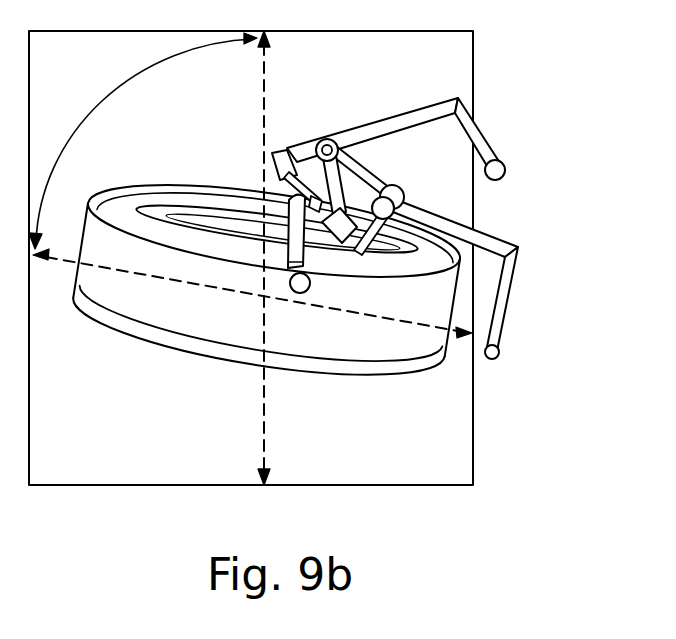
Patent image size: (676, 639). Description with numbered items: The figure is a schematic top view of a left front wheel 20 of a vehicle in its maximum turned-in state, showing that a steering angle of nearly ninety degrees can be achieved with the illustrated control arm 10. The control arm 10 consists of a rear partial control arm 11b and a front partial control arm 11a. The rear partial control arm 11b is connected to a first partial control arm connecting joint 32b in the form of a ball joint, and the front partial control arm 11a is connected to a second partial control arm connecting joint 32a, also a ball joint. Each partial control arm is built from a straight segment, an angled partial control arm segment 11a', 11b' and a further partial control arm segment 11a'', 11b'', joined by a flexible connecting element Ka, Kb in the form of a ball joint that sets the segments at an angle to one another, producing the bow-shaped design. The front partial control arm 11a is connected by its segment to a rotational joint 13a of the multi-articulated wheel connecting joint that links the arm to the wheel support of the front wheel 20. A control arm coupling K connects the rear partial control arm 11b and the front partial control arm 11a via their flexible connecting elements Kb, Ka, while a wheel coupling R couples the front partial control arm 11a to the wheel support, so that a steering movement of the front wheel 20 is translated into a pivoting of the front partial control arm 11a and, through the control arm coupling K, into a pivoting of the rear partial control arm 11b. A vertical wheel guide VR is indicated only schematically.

The control arm 10 is at (275, 126).
The wheel coupling R is at (273, 154).
The flexible connecting element Ka is at (322, 143).
The front partial control arm segment 11a'' is at (381, 135).
The control arm coupling K is at (451, 275).
The front partial control arm 11a is at (456, 112).
The angled partial control arm segment 11a' is at (540, 132).
The second partial control arm connecting joint 32a is at (504, 164).
The flexible connecting element Kb is at (404, 210).
The rear partial control arm segment 11b'' is at (512, 228).
The rotational joint 13a is at (512, 254).
The rear partial control arm 11b is at (512, 332).
The angled partial control arm segment 11b' is at (556, 323).
The first partial control arm connecting joint 32b is at (494, 358).
The front wheel 20 is at (284, 354).
The vertical wheel guide VR is at (301, 294).